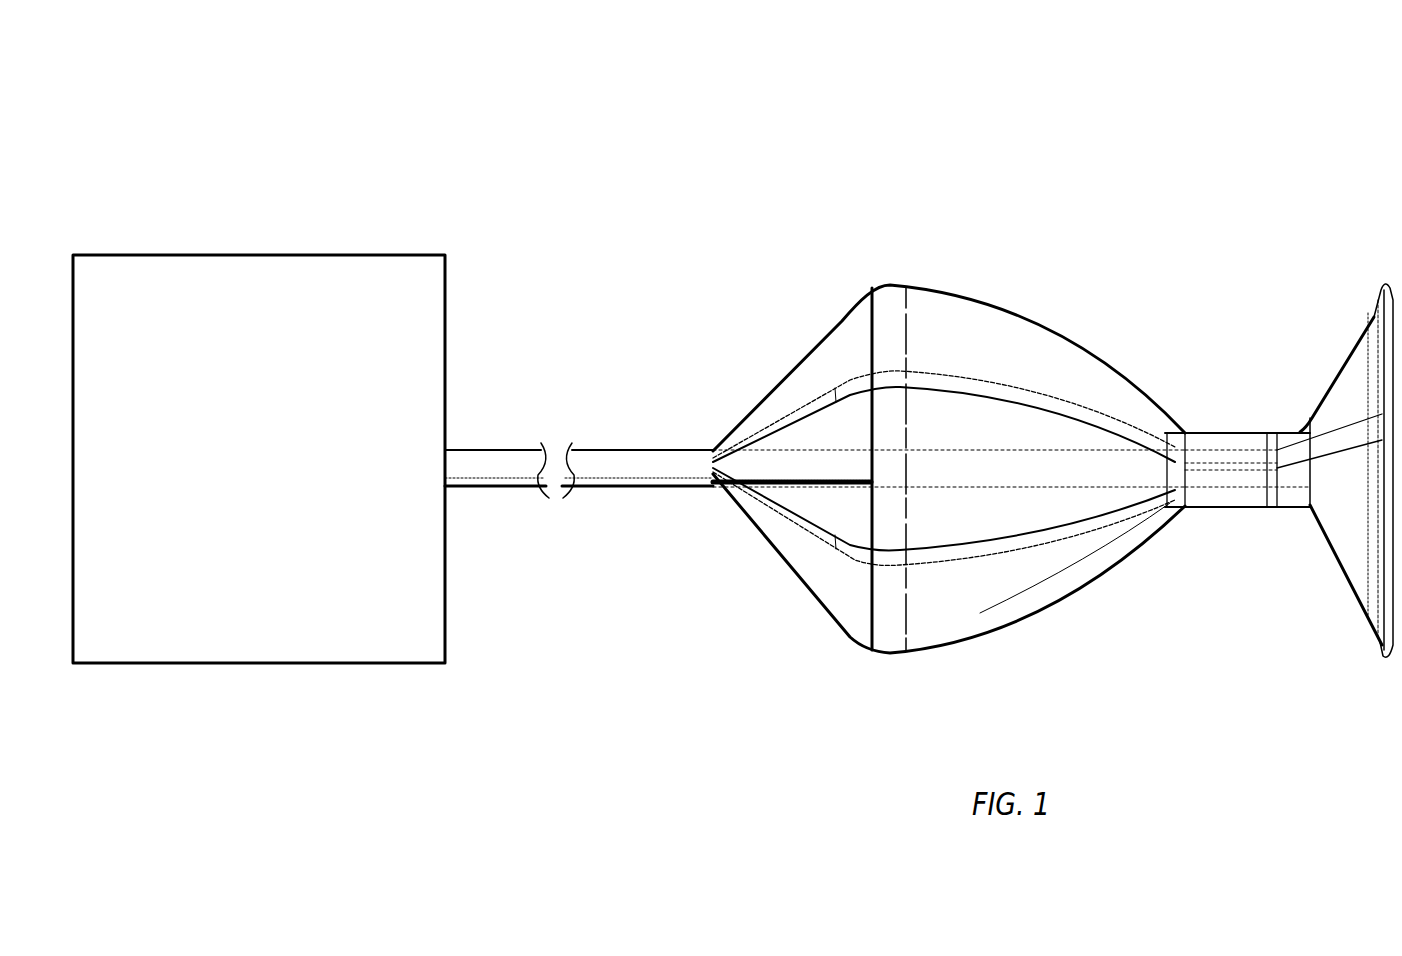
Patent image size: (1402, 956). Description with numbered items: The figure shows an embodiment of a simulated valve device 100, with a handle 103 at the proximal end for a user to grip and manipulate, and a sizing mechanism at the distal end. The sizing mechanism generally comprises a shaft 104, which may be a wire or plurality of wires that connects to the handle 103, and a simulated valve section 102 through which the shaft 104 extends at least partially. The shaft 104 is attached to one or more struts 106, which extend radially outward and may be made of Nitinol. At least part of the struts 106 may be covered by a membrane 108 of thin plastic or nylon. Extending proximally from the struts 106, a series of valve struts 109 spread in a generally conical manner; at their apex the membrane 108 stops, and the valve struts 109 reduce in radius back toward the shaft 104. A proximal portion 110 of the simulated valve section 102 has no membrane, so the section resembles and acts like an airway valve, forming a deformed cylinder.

The simulated valve device 100 is at (703, 146).
The simulated valve section 102 is at (1149, 263).
The handle 103 is at (329, 255).
The shaft 104 is at (613, 450).
The struts 106 is at (1335, 470).
The membrane 108 is at (938, 630).
The valve struts 109 is at (827, 325).
The proximal portion 110 is at (828, 576).